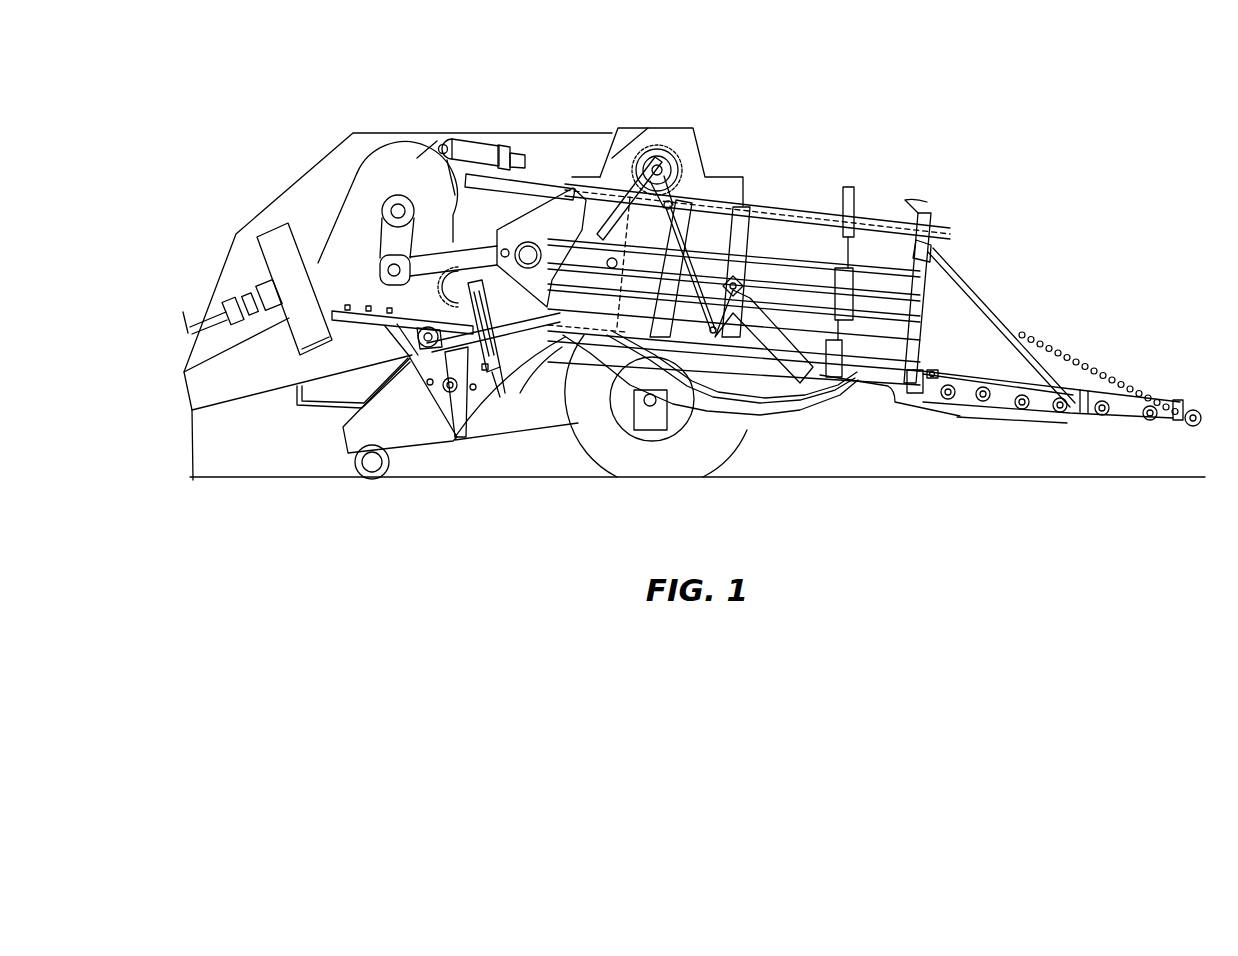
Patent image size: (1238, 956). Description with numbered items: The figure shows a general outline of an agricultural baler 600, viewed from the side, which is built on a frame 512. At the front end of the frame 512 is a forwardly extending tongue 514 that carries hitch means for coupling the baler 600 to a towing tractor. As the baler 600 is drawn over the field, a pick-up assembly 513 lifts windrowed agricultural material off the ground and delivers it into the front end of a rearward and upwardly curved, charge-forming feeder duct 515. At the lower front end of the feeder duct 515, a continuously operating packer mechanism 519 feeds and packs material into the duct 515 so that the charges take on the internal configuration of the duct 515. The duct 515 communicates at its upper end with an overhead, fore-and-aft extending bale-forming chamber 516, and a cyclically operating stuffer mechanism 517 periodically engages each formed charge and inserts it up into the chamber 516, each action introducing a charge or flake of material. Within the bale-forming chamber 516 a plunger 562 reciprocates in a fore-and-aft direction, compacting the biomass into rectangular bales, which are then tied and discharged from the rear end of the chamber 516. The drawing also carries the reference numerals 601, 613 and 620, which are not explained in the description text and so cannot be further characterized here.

The agricultural baler 600 is at (733, 125).
The knotter drive 601 is at (626, 148).
The plunger 562 is at (557, 224).
The bale-forming chamber 516 is at (790, 247).
The hitch / chain 620 is at (1115, 358).
The wheel hub 613 is at (713, 410).
The stuffer mechanism 517 is at (500, 427).
The feeder duct 515 is at (520, 383).
The tongue 514 is at (253, 385).
The pick-up assembly 513 is at (411, 478).
The packer mechanism 519 is at (467, 405).
The frame 512 is at (550, 323).